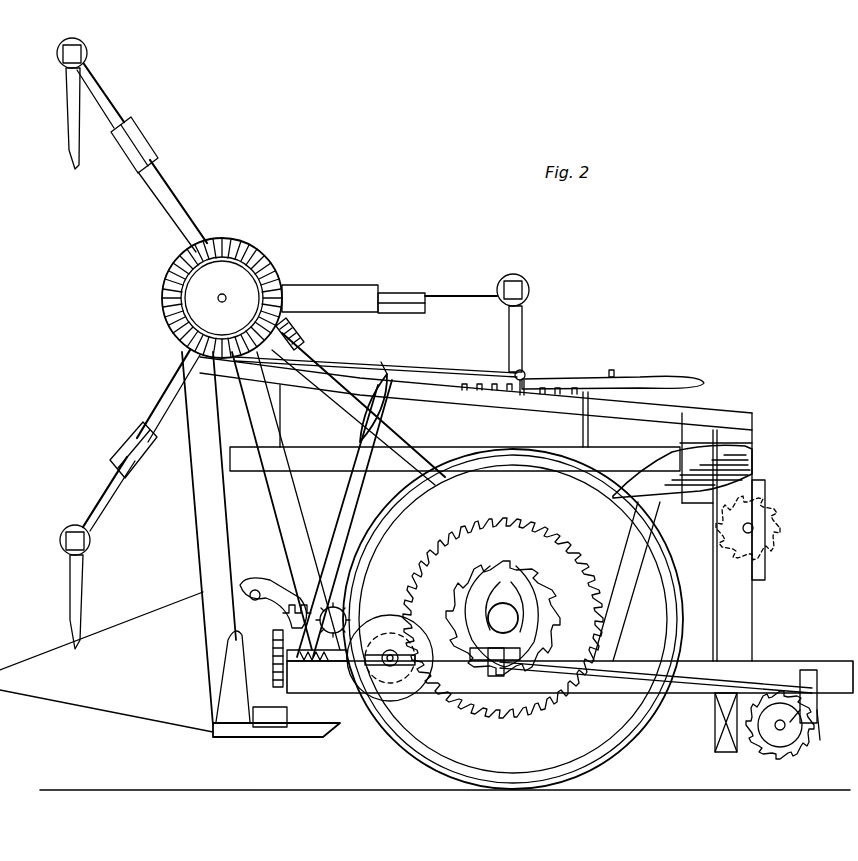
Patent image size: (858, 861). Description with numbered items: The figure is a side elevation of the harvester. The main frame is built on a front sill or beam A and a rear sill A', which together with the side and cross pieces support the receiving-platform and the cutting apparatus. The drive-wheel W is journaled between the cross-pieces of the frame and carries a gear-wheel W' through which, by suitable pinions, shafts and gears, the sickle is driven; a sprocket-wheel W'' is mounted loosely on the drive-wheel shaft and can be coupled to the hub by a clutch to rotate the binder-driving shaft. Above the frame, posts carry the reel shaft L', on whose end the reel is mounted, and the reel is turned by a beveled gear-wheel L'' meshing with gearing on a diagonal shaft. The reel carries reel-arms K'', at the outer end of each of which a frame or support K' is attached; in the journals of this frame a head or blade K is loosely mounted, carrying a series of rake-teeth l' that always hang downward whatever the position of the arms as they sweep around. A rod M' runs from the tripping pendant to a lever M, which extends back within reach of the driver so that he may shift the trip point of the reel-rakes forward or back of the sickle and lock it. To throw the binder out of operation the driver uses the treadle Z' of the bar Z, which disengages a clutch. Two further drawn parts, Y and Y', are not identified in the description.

The head or blade K is at (303, 292).
The frame or support K' is at (287, 297).
The reel-arm K'' is at (267, 297).
The rake-teeth l' is at (290, 358).
The beveled gear-wheel L'' is at (222, 293).
The shaft L' is at (231, 302).
The rod M' is at (376, 359).
The lever M is at (613, 371).
The seat Y is at (682, 471).
The seat strut Y' is at (626, 581).
The drive-wheel W is at (513, 619).
The gear-wheel W' is at (503, 606).
The sprocket-wheel W'' is at (503, 608).
The bar Z is at (656, 678).
The treadle Z' is at (482, 669).
The front sill or beam A is at (270, 717).
The rear sill A' is at (712, 722).